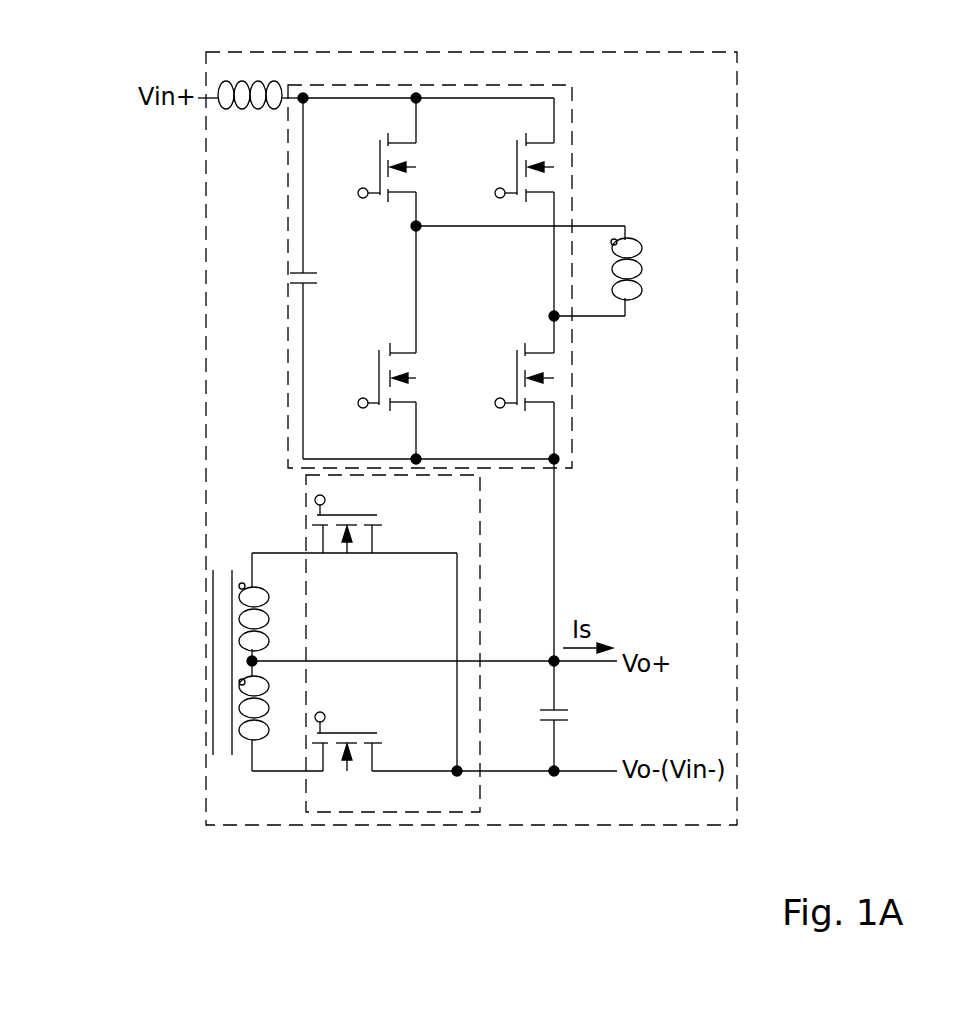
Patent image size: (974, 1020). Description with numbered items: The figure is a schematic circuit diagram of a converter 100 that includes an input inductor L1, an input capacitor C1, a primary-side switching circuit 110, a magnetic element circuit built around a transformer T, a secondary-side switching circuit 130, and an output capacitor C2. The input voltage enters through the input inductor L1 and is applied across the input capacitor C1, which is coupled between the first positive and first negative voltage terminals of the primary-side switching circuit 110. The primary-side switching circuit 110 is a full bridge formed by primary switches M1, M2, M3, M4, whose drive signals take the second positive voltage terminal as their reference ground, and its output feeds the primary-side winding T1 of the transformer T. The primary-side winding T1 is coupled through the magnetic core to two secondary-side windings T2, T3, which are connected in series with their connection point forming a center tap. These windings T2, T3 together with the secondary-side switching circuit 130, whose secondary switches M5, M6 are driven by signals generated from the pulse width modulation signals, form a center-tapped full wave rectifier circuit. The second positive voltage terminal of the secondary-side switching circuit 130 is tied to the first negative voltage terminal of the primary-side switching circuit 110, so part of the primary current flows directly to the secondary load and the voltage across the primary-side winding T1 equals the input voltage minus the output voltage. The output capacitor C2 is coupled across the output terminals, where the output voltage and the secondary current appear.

The converter 100 is at (737, 88).
The primary-side switching circuit 110 is at (572, 107).
The secondary-side switching circuit 130 is at (418, 812).
The input inductor L1 is at (250, 112).
The input capacitor C1 is at (317, 293).
The output capacitor C2 is at (535, 717).
The primary switch M1 is at (363, 157).
The primary switch M2 is at (499, 157).
The primary switch M3 is at (501, 367).
The primary switch M4 is at (364, 367).
The secondary switch M5 is at (347, 531).
The secondary switch M6 is at (347, 751).
The transformer T is at (257, 643).
The primary-side winding T1 is at (529, 271).
The secondary-side winding T2 is at (270, 622).
The secondary-side winding T3 is at (270, 700).